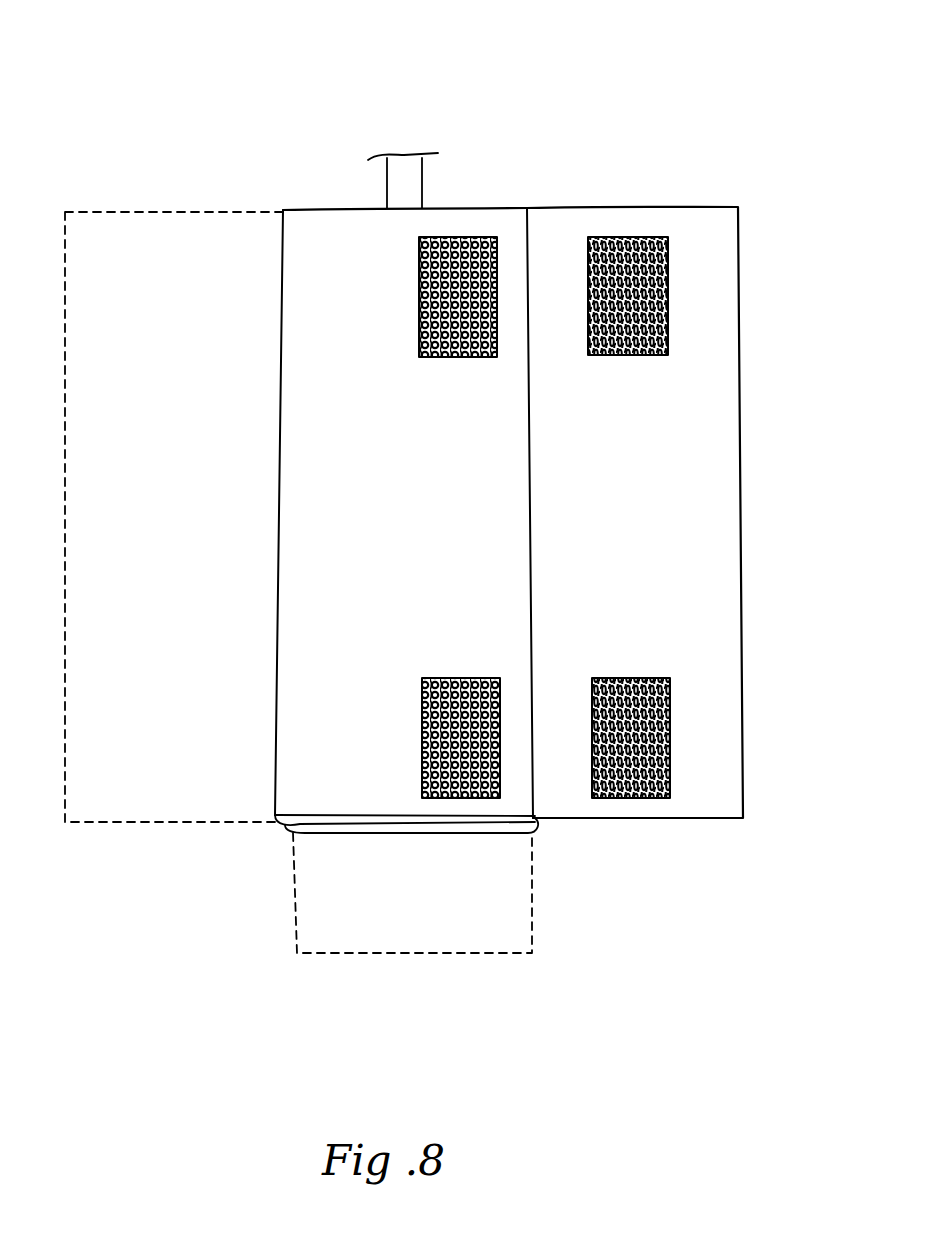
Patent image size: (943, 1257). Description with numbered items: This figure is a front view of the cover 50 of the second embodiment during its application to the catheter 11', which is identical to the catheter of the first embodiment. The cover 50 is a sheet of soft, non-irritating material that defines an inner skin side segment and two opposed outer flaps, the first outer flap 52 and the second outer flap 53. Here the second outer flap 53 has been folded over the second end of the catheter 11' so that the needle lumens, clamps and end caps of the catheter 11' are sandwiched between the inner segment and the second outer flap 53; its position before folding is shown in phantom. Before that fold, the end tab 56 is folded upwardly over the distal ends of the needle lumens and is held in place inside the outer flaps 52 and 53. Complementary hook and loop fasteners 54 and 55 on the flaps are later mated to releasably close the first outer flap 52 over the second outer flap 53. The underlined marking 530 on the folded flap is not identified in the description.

The cover 50 is at (550, 136).
The main panel 530 is at (374, 378).
The first outer flap 52 is at (605, 207).
The catheter 11' is at (403, 122).
The second outer flap 53 is at (128, 248).
The hook and loop fastener 54 is at (668, 305).
The hook and loop fastener 55 is at (452, 357).
The end tab 56 is at (332, 826).